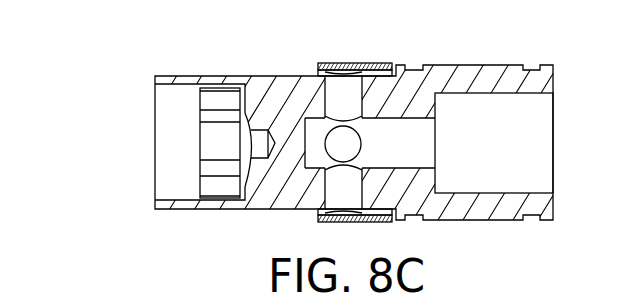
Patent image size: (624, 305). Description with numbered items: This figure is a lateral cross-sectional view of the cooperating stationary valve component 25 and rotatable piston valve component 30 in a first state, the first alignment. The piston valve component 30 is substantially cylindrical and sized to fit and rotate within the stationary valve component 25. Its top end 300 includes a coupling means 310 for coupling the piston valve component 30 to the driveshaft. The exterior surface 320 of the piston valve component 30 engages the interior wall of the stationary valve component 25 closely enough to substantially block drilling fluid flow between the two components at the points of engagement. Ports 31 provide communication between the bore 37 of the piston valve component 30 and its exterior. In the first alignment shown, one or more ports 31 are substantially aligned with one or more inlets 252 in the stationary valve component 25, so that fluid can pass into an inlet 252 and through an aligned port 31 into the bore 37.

The top end 300 is at (319, 144).
The coupling means 310 is at (200, 108).
The exterior surface 320 is at (247, 207).
The piston valve component 30 is at (287, 110).
The ports 31 is at (356, 106).
The bore 37 is at (499, 154).
The stationary valve component 25 is at (372, 63).
The inlets 252 is at (318, 74).